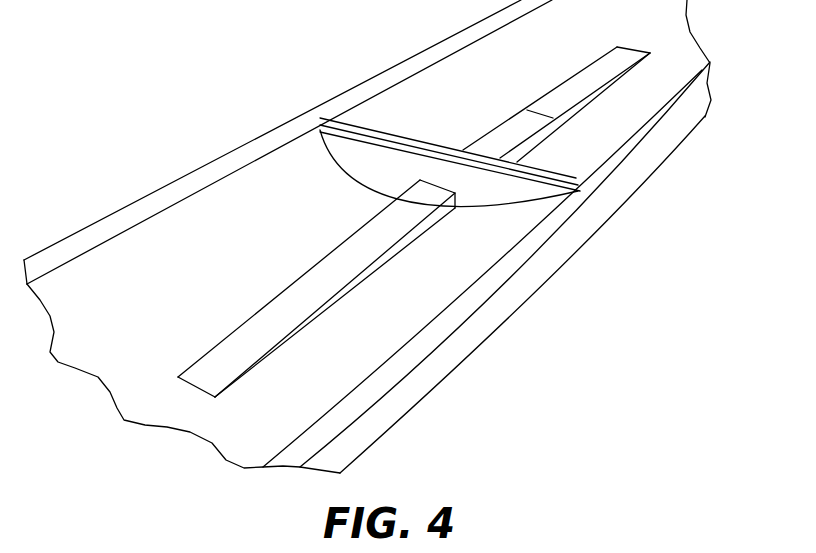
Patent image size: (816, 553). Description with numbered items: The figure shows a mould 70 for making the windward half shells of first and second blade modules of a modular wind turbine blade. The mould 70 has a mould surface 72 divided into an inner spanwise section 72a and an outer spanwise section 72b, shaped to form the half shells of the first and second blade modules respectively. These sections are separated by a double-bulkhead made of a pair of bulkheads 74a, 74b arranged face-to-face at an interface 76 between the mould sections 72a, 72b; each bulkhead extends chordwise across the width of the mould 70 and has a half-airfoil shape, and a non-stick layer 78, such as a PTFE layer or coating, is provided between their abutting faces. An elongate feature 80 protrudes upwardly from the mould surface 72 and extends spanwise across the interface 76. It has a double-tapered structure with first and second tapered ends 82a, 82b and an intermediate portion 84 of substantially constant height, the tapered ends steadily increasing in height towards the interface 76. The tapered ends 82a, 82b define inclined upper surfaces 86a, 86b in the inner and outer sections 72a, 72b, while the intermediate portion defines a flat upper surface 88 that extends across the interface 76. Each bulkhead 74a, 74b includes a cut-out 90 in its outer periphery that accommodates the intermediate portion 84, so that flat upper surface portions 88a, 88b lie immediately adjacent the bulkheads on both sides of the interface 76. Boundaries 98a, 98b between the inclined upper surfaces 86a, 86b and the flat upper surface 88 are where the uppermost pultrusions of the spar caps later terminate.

The mould 70 is at (276, 76).
The mould surface 72 is at (113, 256).
The inner spanwise section 72a is at (334, 391).
The outer spanwise section 72b is at (624, 120).
The bulkhead 74a is at (340, 140).
The bulkhead 74b is at (365, 120).
The interface 76 is at (593, 194).
The non-stick layer 78 is at (397, 137).
The elongate feature 80 is at (397, 257).
The first tapered end 82a is at (316, 313).
The second tapered end 82b is at (608, 85).
The intermediate portion 84 is at (431, 222).
The inclined upper surface 86a is at (207, 365).
The inclined upper surface 86b is at (590, 72).
The flat upper surface 88 is at (352, 233).
The flat upper surface portion 88a is at (413, 183).
The flat upper surface portion 88b is at (481, 147).
The cut-out 90 is at (458, 202).
The boundary 98a is at (318, 238).
The boundary 98b is at (571, 118).